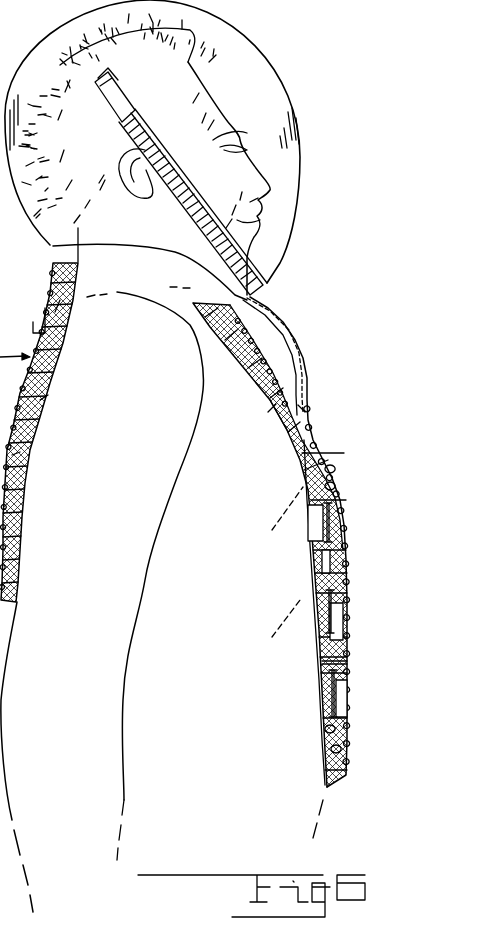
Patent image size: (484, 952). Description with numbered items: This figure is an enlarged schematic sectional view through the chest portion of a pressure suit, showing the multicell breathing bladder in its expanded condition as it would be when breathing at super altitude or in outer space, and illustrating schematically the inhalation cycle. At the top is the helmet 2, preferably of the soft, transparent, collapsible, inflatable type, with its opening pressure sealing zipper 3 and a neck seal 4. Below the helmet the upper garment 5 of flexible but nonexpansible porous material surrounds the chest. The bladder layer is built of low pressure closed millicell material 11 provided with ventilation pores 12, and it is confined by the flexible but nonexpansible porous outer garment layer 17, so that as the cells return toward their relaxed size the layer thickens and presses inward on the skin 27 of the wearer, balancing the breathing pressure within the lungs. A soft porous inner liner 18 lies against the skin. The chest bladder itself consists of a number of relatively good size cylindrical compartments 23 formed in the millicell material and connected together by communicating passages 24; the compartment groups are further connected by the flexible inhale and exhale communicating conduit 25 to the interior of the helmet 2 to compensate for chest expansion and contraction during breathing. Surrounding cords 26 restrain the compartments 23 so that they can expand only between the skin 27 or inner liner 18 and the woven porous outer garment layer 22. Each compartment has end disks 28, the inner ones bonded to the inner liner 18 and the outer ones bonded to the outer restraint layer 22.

The helmet 2 is at (262, 46).
The pressure sealing zipper 3 is at (190, 200).
The neck seal 4 is at (58, 278).
The upper garment 5 is at (340, 436).
The low pressure millicell material 11 is at (26, 426).
The ventilation pores 12 is at (300, 357).
The outer garment layer 17 is at (316, 411).
The inner liner 18 is at (36, 376).
The woven porous outer garment layer 22 is at (45, 308).
The cylindrical compartments 23 is at (300, 410).
The communicating passages 24 is at (308, 448).
The inhale and exhale communicating conduit 25 is at (292, 337).
The cords 26 is at (330, 603).
The skin 27 is at (335, 661).
The end disks 28 is at (340, 476).